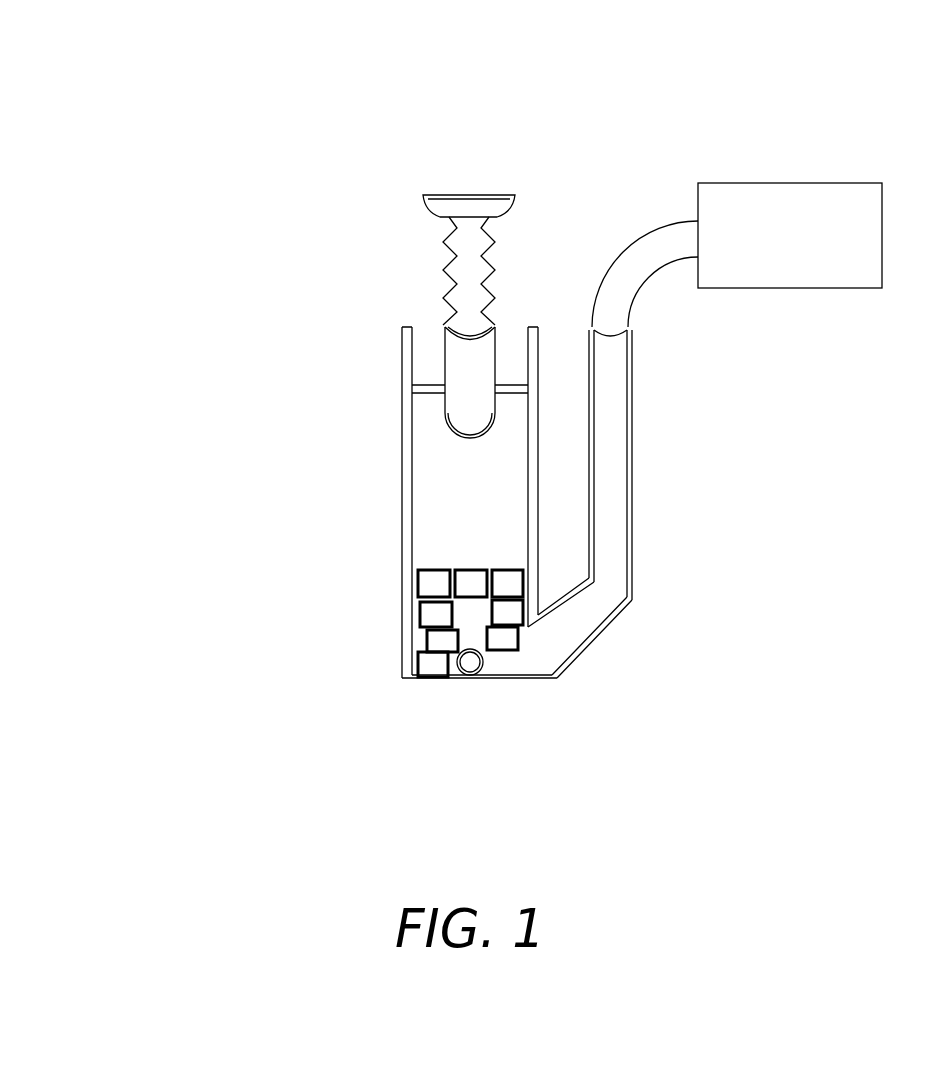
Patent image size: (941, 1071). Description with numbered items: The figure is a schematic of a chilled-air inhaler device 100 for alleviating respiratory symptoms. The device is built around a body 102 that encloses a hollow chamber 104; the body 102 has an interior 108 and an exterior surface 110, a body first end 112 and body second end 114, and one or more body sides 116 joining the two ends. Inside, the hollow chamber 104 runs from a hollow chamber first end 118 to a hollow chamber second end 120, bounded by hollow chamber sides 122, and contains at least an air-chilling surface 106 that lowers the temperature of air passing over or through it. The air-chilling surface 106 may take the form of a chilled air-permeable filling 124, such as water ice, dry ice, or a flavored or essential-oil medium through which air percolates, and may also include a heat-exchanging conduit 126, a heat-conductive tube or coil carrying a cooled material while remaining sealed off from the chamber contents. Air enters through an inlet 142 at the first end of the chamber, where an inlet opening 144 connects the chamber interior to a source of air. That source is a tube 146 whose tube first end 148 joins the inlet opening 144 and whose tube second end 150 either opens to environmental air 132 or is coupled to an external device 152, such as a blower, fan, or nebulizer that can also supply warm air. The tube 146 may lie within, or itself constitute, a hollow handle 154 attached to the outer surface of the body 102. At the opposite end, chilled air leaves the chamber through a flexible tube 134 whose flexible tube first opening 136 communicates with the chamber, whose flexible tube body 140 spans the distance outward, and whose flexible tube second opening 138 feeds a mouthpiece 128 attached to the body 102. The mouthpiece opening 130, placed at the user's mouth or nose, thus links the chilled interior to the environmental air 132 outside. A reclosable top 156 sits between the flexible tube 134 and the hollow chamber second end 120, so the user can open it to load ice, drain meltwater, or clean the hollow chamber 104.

The chilled-air inhaler device 100 is at (298, 98).
The body 102 is at (413, 470).
The hollow chamber 104 is at (458, 555).
The air-chilling surface 106 is at (483, 605).
The interior 108 is at (418, 620).
The exterior surface 110 is at (417, 570).
The body first end 112 is at (425, 678).
The body second end 114 is at (517, 325).
The body sides 116 is at (413, 360).
The hollow chamber first end 118 is at (513, 663).
The hollow chamber second end 120 is at (423, 357).
The hollow chamber sides 122 is at (423, 383).
The chilled air-permeable filling 124 is at (427, 638).
The heat-exchanging conduit 126 is at (460, 677).
The mouthpiece 128 is at (440, 216).
The mouthpiece opening 130 is at (457, 200).
The environmental air 132 is at (652, 63).
The flexible tube 134 is at (517, 197).
The flexible tube first opening 136 is at (467, 438).
The flexible tube second opening 138 is at (488, 247).
The flexible tube body 140 is at (444, 248).
The inlet 142 is at (613, 468).
The inlet opening 144 is at (530, 652).
The tube 146 is at (607, 537).
The tube first end 148 is at (538, 630).
The tube second end 150 is at (632, 343).
The external device 152 is at (828, 183).
The handle 154 is at (632, 397).
The reclosable top 156 is at (440, 385).